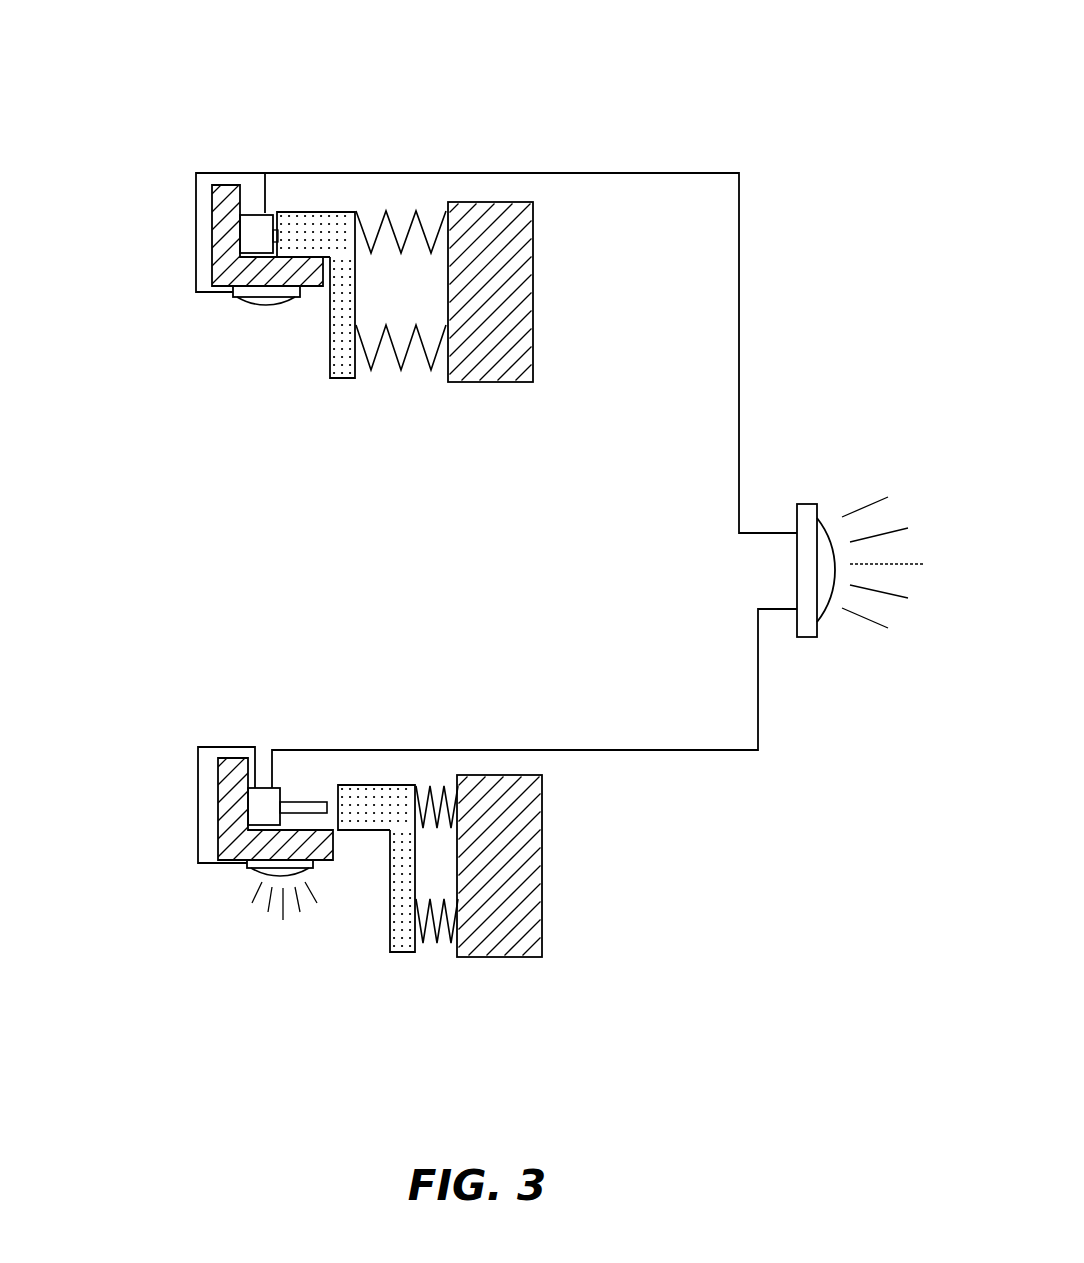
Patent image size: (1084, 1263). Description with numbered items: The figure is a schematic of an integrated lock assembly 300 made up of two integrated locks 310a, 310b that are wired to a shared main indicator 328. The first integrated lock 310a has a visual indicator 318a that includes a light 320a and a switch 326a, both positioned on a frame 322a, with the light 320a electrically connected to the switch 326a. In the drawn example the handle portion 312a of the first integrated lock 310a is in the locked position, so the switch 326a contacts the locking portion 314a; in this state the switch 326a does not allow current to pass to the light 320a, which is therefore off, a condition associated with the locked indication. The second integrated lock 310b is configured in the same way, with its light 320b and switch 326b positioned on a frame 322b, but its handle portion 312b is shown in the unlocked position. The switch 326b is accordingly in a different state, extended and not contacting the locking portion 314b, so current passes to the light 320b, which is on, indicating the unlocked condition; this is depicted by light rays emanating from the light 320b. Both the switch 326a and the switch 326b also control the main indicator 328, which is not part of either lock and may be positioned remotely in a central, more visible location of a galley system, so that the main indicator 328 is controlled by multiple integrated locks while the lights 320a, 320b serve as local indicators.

The integrated lock assembly 300 is at (672, 100).
The first integrated lock 310a is at (480, 160).
The second integrated lock 310b is at (490, 732).
The handle portion 312a is at (347, 372).
The handle portion 312b is at (403, 923).
The locking portion 314a is at (300, 217).
The locking portion 314b is at (360, 797).
The visual indicator 318a is at (240, 330).
The light 320a is at (247, 305).
The light 320b is at (283, 870).
The frame 322a is at (227, 268).
The frame 322b is at (232, 843).
The switch 326a is at (248, 232).
The switch 326b is at (300, 797).
The main indicator 328 is at (810, 515).